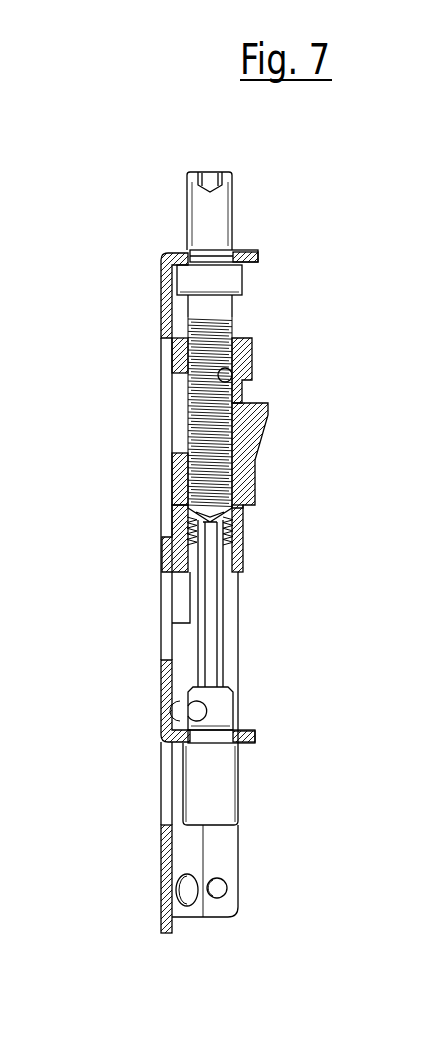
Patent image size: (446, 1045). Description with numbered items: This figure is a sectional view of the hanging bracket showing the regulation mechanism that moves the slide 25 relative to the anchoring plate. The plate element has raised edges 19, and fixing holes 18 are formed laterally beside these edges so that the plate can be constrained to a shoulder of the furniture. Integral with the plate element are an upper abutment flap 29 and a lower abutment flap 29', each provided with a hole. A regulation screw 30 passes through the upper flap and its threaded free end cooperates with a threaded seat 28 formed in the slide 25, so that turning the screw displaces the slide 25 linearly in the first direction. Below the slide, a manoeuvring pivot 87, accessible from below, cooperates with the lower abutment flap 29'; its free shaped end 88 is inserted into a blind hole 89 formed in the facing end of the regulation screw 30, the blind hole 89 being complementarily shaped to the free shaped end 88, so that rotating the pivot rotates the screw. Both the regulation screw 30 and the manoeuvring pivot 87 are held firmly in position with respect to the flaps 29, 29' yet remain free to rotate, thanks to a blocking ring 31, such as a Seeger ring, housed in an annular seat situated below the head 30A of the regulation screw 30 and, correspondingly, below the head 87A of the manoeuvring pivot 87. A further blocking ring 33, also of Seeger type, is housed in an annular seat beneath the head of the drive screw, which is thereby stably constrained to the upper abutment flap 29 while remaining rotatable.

The regulation screw 30 is at (219, 150).
The head 30A is at (195, 208).
The upper abutment flap 29 is at (293, 232).
The blocking ring 31 is at (177, 253).
The blocking ring 33 is at (233, 266).
The threaded seat 28 is at (228, 381).
The slide 25 is at (255, 413).
The blind hole 89 is at (214, 522).
The free shaped end 88 is at (197, 512).
The manoeuvring pivot 87 is at (208, 607).
The lower abutment flap 29' is at (284, 742).
The head 87A is at (198, 785).
The raised edge 19 is at (233, 865).
The fixing hole 18 is at (221, 883).